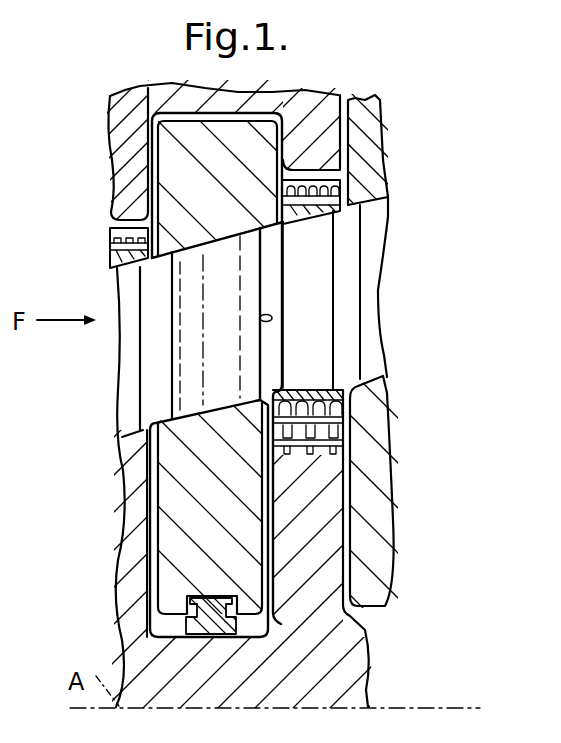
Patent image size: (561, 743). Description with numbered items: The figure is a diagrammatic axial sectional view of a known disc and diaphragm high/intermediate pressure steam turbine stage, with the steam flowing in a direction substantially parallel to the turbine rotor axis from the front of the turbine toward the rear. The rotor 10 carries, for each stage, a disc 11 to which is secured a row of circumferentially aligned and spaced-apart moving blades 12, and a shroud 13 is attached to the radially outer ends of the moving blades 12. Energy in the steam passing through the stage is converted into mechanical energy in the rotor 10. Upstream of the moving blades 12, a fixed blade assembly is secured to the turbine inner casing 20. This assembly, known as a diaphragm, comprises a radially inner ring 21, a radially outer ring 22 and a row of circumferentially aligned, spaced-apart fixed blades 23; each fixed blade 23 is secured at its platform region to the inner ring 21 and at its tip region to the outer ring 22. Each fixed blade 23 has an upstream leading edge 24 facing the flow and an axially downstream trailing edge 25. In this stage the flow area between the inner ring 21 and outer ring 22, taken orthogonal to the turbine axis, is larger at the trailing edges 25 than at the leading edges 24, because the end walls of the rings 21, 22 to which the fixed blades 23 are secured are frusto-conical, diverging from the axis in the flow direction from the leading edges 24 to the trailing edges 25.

The rotor 10 is at (360, 657).
The disc 11 is at (327, 508).
The moving blades 12 is at (326, 320).
The shroud 13 is at (285, 214).
The turbine inner casing 20 is at (123, 133).
The radially inner ring 21 is at (228, 520).
The radially outer ring 22 is at (233, 180).
The fixed blades 23 is at (230, 378).
The leading edge 24 is at (172, 291).
The trailing edge 25 is at (259, 318).